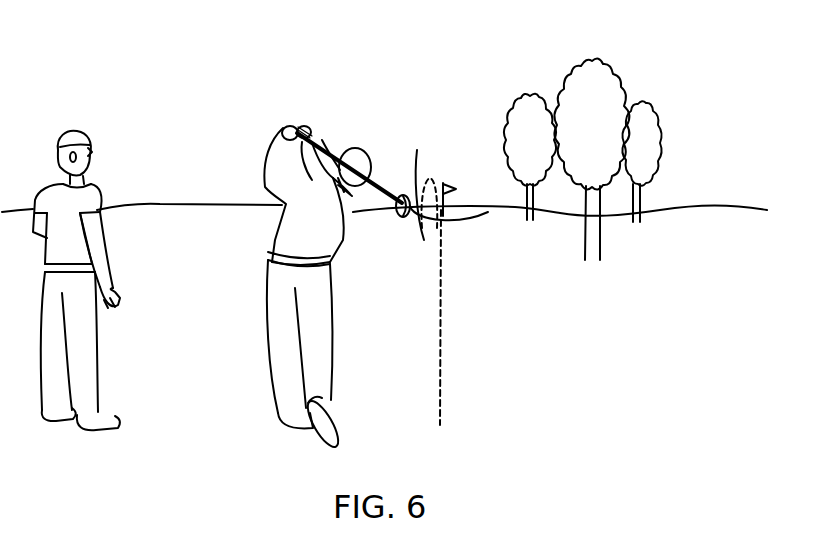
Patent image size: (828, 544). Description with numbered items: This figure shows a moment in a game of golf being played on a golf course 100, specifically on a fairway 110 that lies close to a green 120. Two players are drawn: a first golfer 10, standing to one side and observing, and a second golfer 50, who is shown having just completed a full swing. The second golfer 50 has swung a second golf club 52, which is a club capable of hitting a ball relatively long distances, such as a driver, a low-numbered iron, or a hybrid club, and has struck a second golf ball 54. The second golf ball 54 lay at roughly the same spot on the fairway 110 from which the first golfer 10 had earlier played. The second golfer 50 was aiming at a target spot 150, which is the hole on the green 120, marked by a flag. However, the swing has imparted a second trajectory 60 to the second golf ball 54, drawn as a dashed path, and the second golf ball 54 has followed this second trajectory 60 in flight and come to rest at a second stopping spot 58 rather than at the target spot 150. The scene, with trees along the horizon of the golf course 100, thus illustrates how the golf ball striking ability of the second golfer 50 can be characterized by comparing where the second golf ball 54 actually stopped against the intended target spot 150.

The first golfer 10 is at (61, 119).
The second golfer 50 is at (338, 259).
The second golf club 52 is at (328, 153).
The second golf ball 54 is at (415, 183).
The second stopping spot 58 is at (423, 240).
The second trajectory 60 is at (440, 335).
The golf course 100 is at (687, 181).
The fairway 110 is at (488, 303).
The green 120 is at (467, 215).
The target spot 150 is at (445, 213).